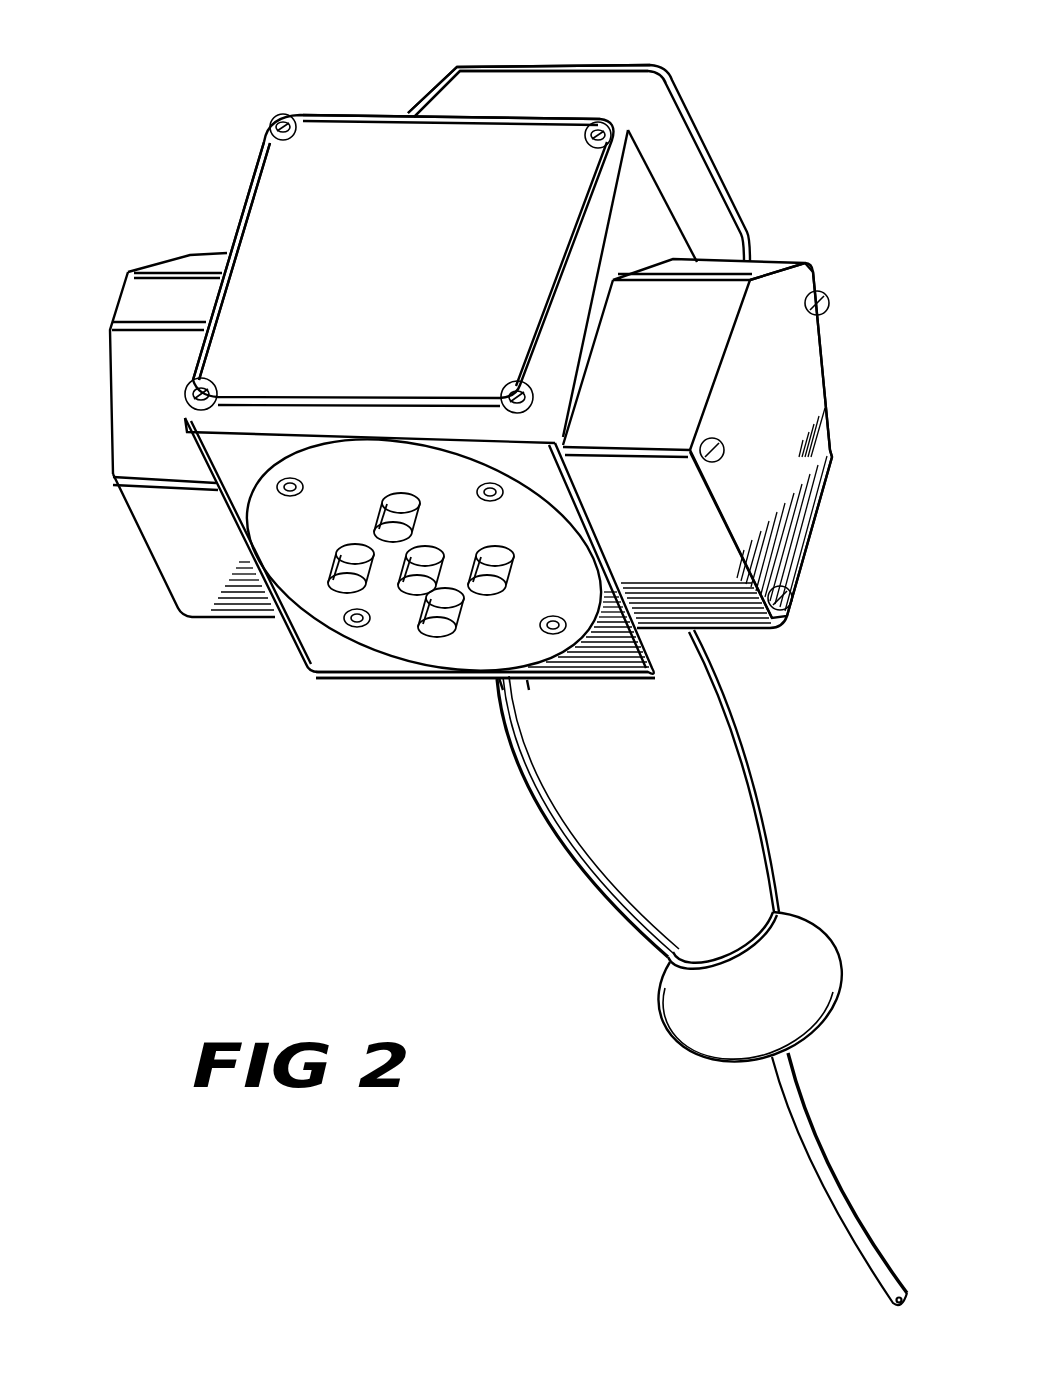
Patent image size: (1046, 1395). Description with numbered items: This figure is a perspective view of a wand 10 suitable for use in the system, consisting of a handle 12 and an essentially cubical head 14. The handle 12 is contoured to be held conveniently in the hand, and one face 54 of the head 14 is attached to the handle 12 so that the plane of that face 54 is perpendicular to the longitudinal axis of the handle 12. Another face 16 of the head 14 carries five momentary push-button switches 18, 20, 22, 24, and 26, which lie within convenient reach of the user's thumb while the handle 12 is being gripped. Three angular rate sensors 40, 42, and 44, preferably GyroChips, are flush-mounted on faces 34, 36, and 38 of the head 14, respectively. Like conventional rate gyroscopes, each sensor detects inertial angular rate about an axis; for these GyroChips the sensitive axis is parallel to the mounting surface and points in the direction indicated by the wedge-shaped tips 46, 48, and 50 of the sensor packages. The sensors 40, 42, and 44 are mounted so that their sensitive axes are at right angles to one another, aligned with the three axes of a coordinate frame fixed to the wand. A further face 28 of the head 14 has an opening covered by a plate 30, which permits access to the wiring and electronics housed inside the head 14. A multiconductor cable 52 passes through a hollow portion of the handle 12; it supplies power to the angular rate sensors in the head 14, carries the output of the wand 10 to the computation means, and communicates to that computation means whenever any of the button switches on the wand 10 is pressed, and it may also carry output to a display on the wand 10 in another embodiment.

The wand 10 is at (848, 680).
The handle 12 is at (607, 857).
The head 14 is at (235, 158).
The face 16 is at (420, 548).
The momentary push-button switch 18 is at (426, 548).
The momentary push-button switch 20 is at (385, 505).
The momentary push-button switch 22 is at (453, 627).
The momentary push-button switch 24 is at (290, 598).
The momentary push-button switch 26 is at (512, 551).
The face 28 is at (265, 203).
The plate 30 is at (427, 256).
The face 34 is at (657, 248).
The face 36 is at (377, 113).
The face 38 is at (248, 229).
The angular rate sensor 40 is at (805, 425).
The angular rate sensor 42 is at (698, 162).
The angular rate sensor 44 is at (162, 540).
The wedge-shaped tip 46 is at (812, 265).
The wedge-shaped tip 48 is at (420, 107).
The wedge-shaped tip 50 is at (115, 311).
The multiconductor cable 52 is at (830, 1177).
The face 54 is at (418, 683).